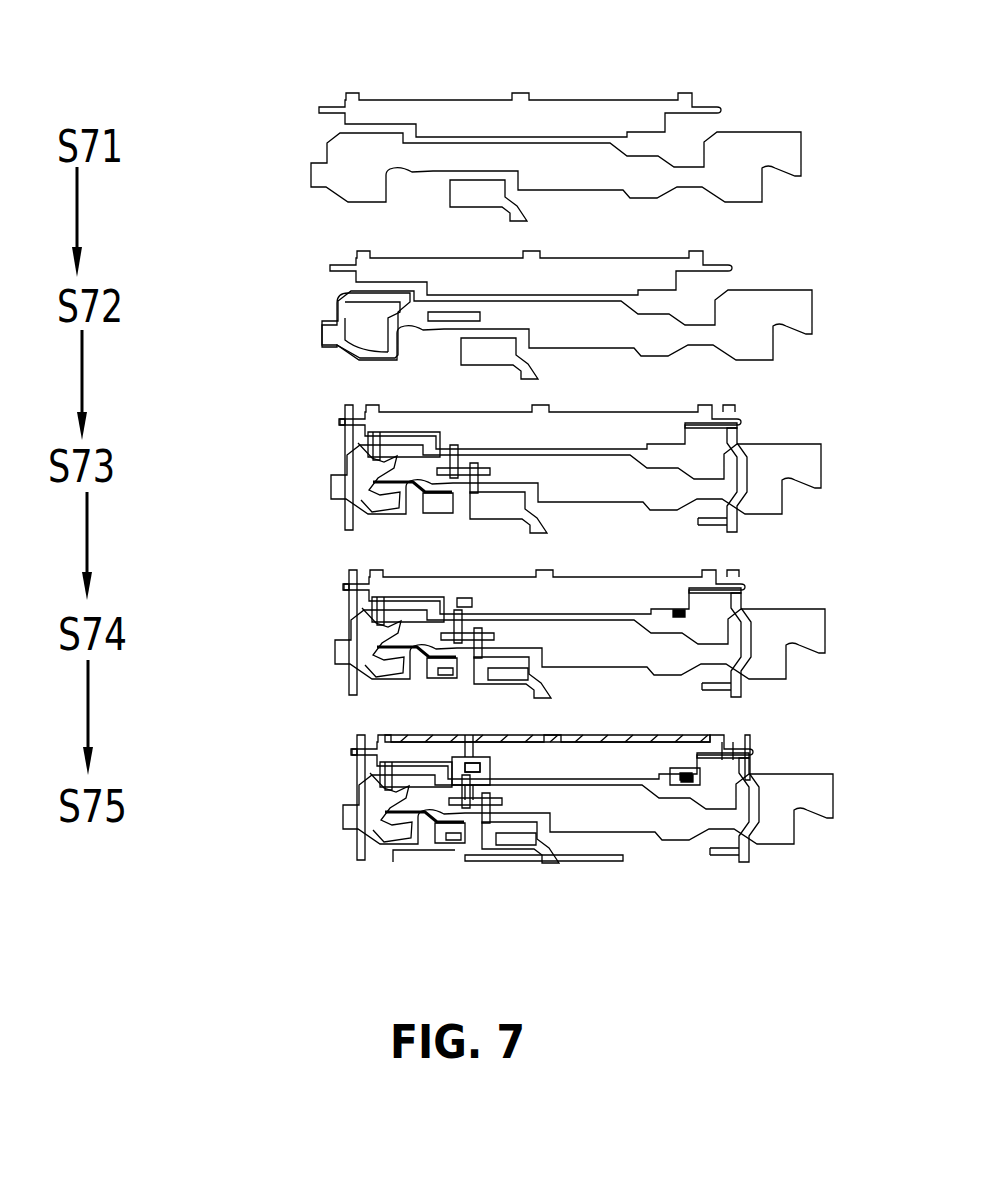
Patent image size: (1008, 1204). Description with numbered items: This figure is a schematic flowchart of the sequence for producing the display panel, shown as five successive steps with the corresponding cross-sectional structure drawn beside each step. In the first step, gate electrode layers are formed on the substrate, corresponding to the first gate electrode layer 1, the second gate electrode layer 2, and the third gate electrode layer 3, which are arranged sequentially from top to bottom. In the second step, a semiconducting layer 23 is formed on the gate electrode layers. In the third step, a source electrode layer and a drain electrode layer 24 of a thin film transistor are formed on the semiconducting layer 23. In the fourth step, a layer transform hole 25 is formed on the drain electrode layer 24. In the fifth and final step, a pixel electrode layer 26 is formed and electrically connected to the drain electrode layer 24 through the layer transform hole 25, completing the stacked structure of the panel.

The first gate electrode layer 1 is at (619, 100).
The second gate electrode layer 2 is at (742, 155).
The third gate electrode layer 3 is at (527, 222).
The semiconducting layer 23 is at (375, 322).
The drain electrode layer 24 is at (465, 447).
The layer transform hole 25 is at (528, 672).
The pixel electrode layer 26 is at (757, 782).